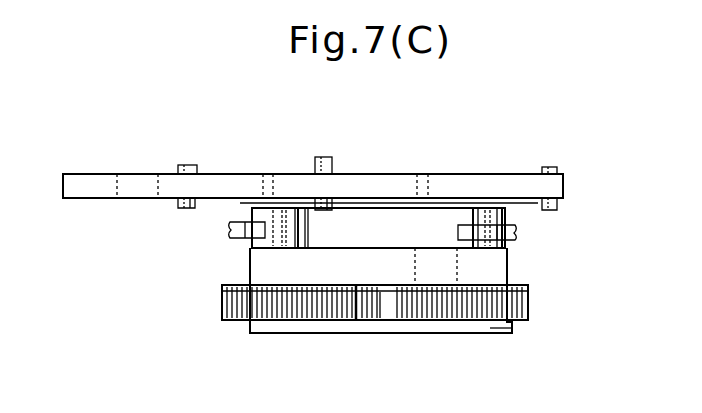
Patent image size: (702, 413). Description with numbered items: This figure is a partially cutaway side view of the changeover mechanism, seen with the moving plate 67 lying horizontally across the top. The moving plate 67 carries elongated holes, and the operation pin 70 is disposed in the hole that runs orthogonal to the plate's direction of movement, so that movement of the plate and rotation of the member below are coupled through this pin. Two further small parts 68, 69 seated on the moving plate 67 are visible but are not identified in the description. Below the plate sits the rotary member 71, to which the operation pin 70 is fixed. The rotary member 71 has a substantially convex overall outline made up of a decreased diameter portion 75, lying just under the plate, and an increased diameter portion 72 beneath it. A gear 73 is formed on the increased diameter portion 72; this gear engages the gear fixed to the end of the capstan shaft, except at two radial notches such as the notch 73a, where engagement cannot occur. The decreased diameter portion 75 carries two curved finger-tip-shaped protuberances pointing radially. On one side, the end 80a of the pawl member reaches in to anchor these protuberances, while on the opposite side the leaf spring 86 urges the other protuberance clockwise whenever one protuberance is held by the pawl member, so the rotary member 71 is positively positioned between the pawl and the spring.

The moving plate 67 is at (497, 180).
The pin 68 is at (185, 165).
The pin 69 is at (553, 167).
The operation pin 70 is at (332, 163).
The rotary member 71 is at (515, 325).
The increased diameter portion 72 is at (509, 265).
The gear 73 is at (520, 305).
The notch 73a is at (383, 312).
The decreased diameter portion 75 is at (308, 217).
The end of pawl member 80a is at (245, 239).
The leaf spring 86 is at (517, 232).